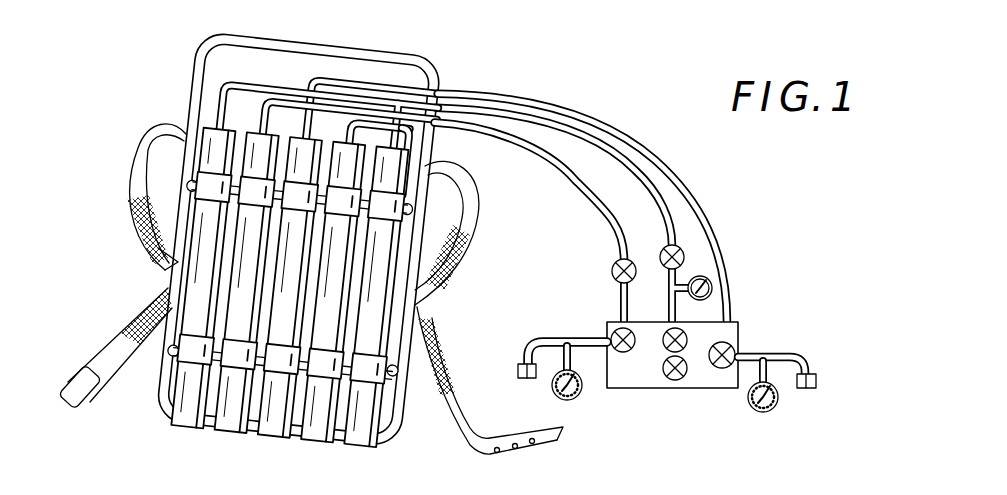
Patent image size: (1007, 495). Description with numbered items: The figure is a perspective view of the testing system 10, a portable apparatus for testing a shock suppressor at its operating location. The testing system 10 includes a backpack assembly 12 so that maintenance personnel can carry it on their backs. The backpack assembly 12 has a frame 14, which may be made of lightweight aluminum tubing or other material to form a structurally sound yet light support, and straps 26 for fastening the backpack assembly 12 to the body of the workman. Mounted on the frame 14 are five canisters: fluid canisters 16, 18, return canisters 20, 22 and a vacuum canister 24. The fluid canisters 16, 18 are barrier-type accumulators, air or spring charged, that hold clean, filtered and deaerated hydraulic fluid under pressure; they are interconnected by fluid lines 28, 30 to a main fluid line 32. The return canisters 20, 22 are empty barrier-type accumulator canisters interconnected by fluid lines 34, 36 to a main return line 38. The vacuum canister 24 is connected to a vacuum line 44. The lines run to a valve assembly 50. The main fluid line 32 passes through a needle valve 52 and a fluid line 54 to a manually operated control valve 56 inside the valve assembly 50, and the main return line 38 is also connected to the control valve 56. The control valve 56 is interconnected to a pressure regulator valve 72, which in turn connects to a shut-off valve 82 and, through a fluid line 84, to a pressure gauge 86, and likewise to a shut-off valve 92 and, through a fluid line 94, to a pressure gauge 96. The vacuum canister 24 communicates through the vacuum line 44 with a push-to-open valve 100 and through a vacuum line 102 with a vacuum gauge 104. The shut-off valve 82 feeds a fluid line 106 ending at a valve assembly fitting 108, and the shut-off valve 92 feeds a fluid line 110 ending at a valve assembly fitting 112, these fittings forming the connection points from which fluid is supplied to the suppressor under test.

The testing system 10 is at (523, 88).
The backpack assembly 12 is at (150, 98).
The frame 14 is at (386, 52).
The fluid canister 16 is at (252, 256).
The fluid canister 18 is at (338, 267).
The return canister 20 is at (210, 231).
The return canister 22 is at (378, 293).
The vacuum canister 24 is at (290, 294).
The straps 26 is at (135, 163).
The fluid line 28 is at (267, 116).
The fluid line 30 is at (352, 132).
The main fluid line 32 is at (504, 138).
The fluid line 34 is at (250, 88).
The fluid line 36 is at (422, 142).
The main return line 38 is at (458, 110).
The vacuum line 44 is at (313, 84).
The valve assembly 50 is at (760, 325).
The needle valve 52 is at (611, 271).
The fluid line 54 is at (618, 300).
The control valve 56 is at (666, 330).
The pressure regulator valve 72 is at (675, 380).
The shut-off valve 82 is at (623, 352).
The fluid line 84 is at (572, 357).
The pressure gauge 86 is at (576, 398).
The shut-off valve 92 is at (723, 368).
The fluid line 94 is at (767, 367).
The pressure gauge 96 is at (763, 412).
The push-to-open valve 100 is at (683, 252).
The vacuum line 102 is at (688, 280).
The vacuum gauge 104 is at (712, 288).
The fluid line 106 is at (538, 338).
The valve assembly fitting 108 is at (518, 377).
The fluid line 110 is at (802, 354).
The valve assembly fitting 112 is at (818, 381).